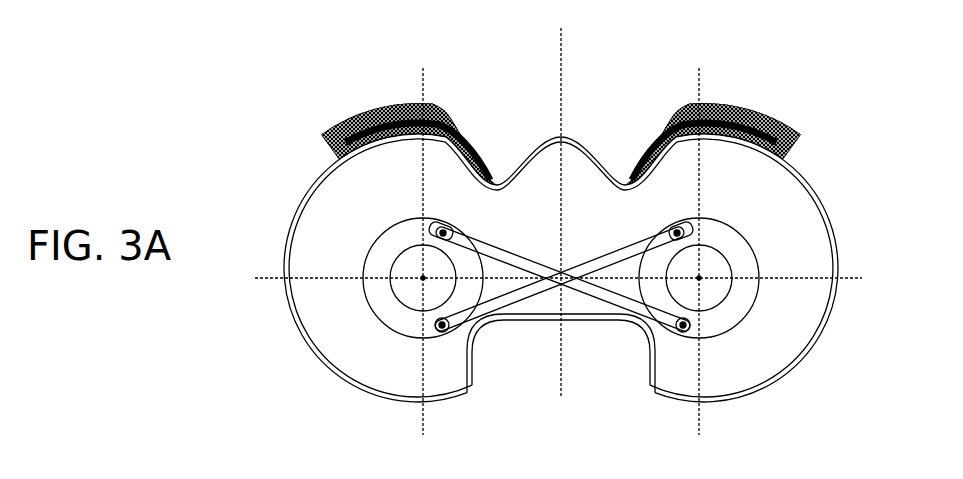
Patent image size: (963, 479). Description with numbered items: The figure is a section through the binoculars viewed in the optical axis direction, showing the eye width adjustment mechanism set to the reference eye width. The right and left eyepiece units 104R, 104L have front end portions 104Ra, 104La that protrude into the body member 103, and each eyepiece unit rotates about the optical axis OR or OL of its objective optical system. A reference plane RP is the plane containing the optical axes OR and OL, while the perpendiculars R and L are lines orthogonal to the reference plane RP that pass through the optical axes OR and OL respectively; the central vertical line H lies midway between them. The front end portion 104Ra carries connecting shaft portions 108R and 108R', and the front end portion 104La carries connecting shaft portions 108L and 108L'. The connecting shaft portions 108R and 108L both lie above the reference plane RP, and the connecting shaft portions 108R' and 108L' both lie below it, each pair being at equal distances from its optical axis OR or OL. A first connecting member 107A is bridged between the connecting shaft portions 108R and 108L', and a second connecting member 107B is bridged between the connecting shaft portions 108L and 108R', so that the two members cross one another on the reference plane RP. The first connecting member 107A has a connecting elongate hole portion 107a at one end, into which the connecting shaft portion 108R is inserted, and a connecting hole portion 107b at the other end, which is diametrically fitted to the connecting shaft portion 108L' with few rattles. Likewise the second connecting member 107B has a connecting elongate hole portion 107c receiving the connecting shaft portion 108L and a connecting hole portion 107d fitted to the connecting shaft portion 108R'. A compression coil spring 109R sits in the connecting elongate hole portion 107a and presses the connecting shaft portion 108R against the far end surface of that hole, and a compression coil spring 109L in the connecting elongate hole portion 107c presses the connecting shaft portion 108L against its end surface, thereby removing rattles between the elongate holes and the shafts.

The body member 103 is at (293, 228).
The right eyepiece unit 104R is at (387, 106).
The left eyepiece unit 104L is at (710, 214).
The compression coil spring 109R is at (445, 226).
The compression coil spring 109L is at (674, 228).
The front end portion 104Ra is at (402, 315).
The front end portion 104La is at (738, 295).
The first connecting member 107A is at (475, 237).
The second connecting member 107B is at (652, 233).
The connecting shaft portion 108R is at (361, 187).
The connecting shaft portion 108L is at (713, 155).
The connecting shaft portion 108R' is at (483, 358).
The connecting shaft portion 108L' is at (639, 370).
The connecting elongate hole portion 107a is at (446, 230).
The connecting hole portion 107b is at (683, 325).
The connecting elongate hole portion 107c is at (700, 213).
The connecting hole portion 107d is at (484, 372).
The optical axis OR is at (423, 278).
The optical axis OL is at (700, 277).
The reference plane RP is at (577, 278).
The perpendicular R- R is at (423, 253).
The perpendicular L- L is at (698, 253).
The horizontal center axis H is at (561, 210).